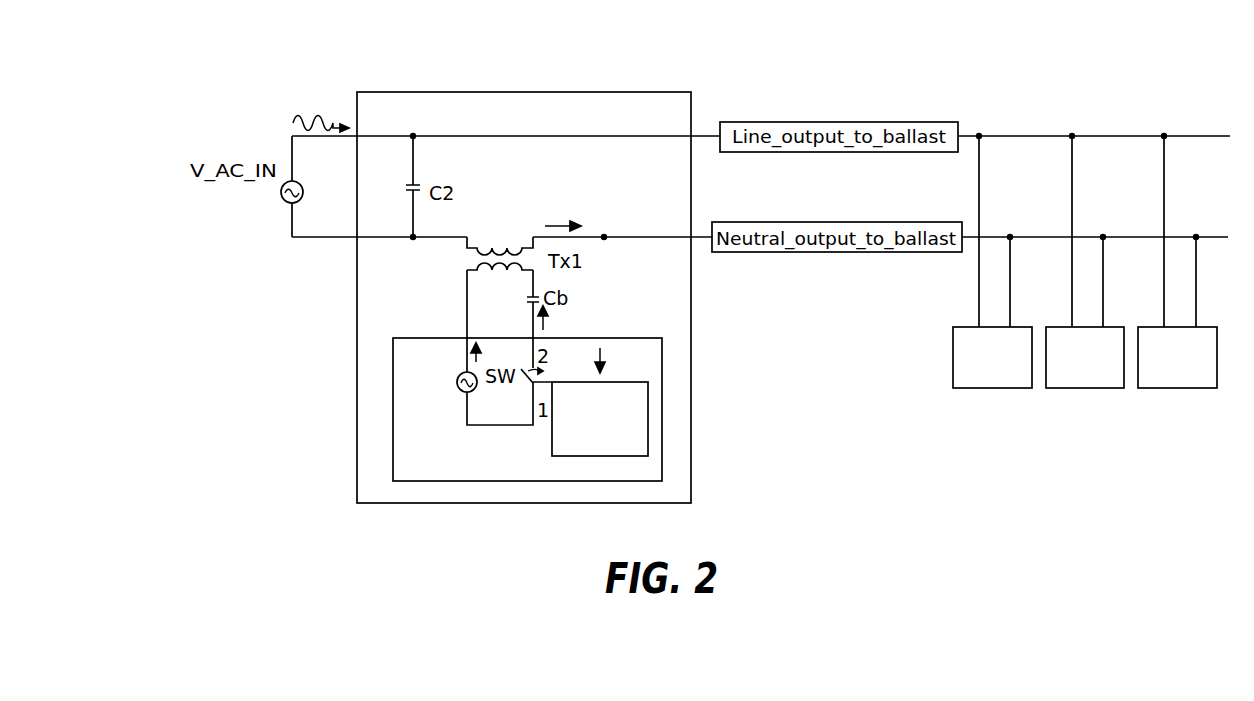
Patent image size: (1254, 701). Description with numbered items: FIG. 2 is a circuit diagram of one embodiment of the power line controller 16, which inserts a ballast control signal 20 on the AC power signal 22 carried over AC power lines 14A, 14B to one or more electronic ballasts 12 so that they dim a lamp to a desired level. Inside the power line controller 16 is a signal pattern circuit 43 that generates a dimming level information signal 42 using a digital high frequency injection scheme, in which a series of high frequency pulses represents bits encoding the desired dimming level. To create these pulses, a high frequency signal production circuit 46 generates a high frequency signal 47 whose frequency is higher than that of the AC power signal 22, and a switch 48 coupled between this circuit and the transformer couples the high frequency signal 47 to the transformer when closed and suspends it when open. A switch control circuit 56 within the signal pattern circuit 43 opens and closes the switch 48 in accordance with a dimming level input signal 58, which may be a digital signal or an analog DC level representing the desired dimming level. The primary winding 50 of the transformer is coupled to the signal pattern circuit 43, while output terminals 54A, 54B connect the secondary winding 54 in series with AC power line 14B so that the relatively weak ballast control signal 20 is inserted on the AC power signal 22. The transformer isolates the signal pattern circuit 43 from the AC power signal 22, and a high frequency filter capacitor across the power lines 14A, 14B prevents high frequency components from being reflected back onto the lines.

The electronic ballast 12 is at (995, 390).
The AC power line 14A is at (637, 136).
The AC power line 14B is at (655, 237).
The power line controller 16 is at (497, 92).
The ballast control signal 20 is at (546, 226).
The AC power signal 22 is at (314, 116).
The dimming level information signal 42 is at (545, 323).
The signal pattern circuit 43 is at (393, 437).
The high frequency signal production circuit 46 is at (458, 390).
The high frequency signal 47 is at (474, 358).
The switch 48 is at (530, 377).
The primary winding 50 is at (478, 264).
The secondary winding 54 is at (497, 252).
The output terminal 54A is at (412, 236).
The output terminal 54B is at (605, 236).
The switch control circuit 56 is at (648, 398).
The dimming level input signal 58 is at (602, 351).